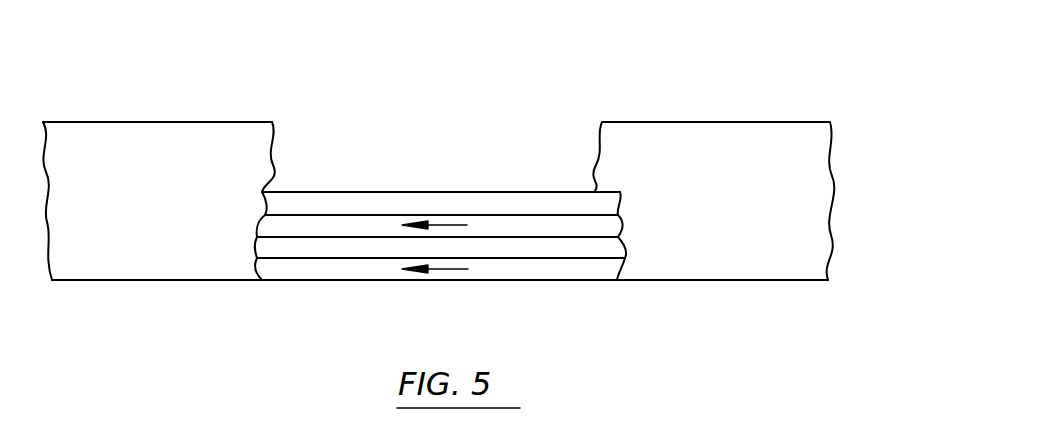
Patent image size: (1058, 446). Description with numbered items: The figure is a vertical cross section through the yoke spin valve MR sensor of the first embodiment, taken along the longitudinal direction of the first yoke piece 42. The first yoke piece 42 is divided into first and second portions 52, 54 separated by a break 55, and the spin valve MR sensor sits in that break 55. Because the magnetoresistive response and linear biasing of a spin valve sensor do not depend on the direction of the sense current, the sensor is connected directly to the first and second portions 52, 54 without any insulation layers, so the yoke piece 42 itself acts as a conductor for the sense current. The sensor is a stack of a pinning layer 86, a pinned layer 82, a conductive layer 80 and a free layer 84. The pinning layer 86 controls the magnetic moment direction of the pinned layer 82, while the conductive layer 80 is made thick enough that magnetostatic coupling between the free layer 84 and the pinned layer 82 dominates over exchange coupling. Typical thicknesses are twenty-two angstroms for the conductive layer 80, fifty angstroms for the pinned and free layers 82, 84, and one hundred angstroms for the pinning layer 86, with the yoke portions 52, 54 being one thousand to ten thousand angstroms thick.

The first yoke piece 42 is at (187, 189).
The first portion of the first yoke piece 52 is at (195, 250).
The second portion of the first yoke piece 54 is at (713, 247).
The break 55 is at (467, 149).
The pinning layer 86 is at (603, 199).
The pinned layer 82 is at (610, 223).
The conductive layer 80 is at (603, 247).
The free layer 84 is at (610, 270).